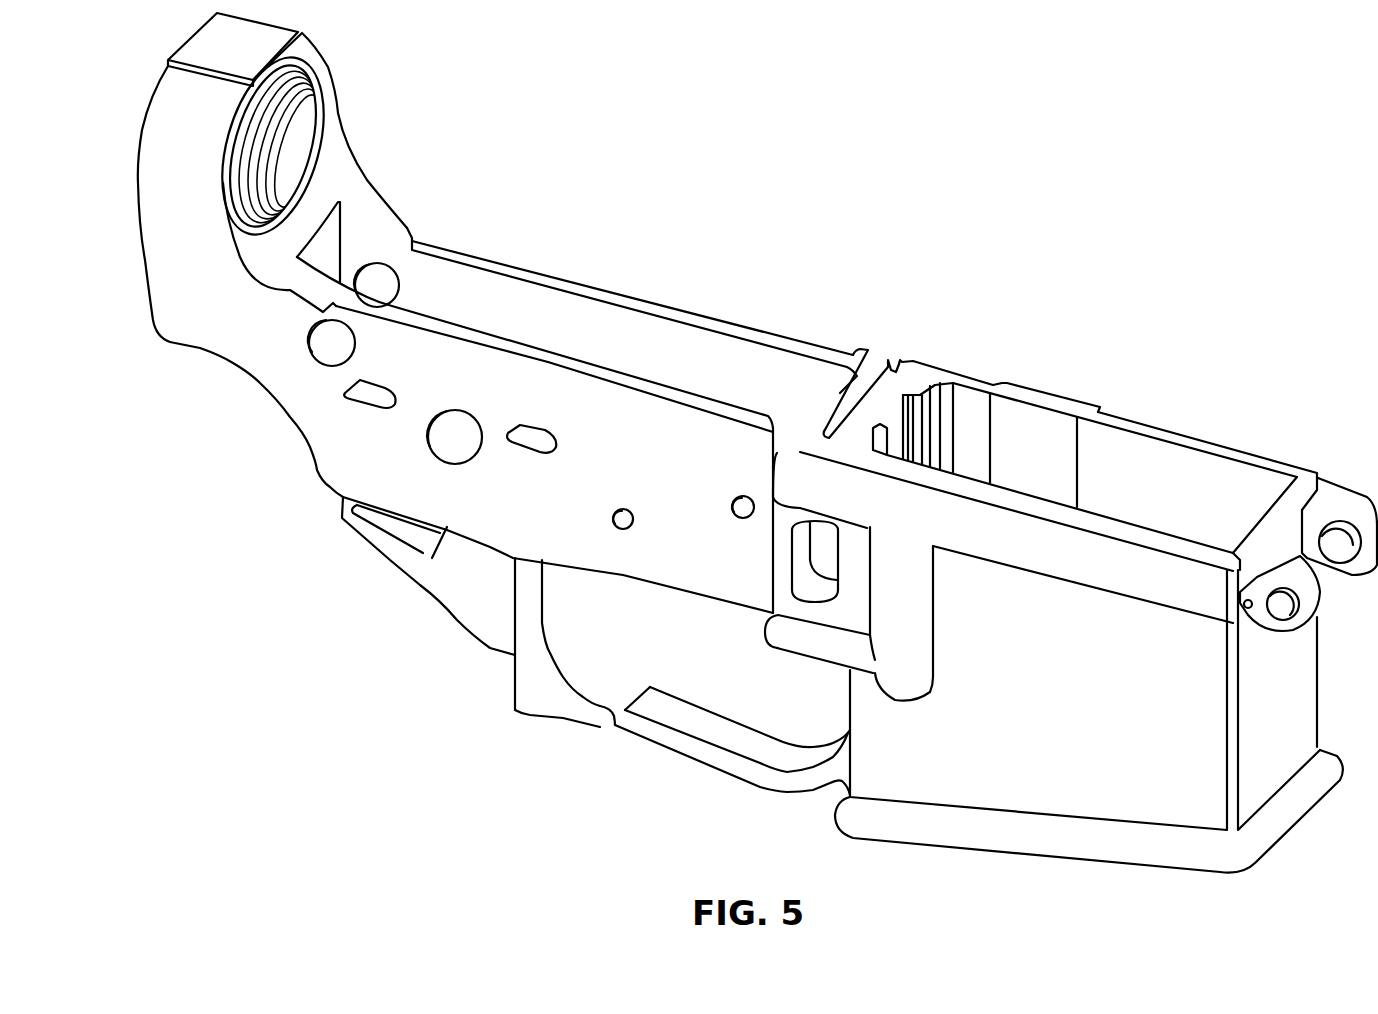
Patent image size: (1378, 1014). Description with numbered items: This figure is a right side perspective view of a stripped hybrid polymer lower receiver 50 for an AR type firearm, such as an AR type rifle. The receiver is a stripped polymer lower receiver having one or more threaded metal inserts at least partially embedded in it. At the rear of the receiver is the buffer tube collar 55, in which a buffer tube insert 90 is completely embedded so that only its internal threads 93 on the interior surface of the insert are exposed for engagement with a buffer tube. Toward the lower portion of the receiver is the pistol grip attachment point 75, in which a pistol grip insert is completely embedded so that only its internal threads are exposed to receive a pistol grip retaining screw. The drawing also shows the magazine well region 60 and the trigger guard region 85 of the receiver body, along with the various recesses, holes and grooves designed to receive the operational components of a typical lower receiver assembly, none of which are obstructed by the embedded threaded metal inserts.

The hybrid polymer lower receiver 50 is at (727, 443).
The buffer tube collar 55 is at (145, 170).
The magazine well 60 is at (1293, 747).
The pistol grip attachment point 75 is at (450, 587).
The trigger guard 85 is at (723, 775).
The buffer tube insert 90 is at (297, 177).
The internal threads 93 is at (300, 100).